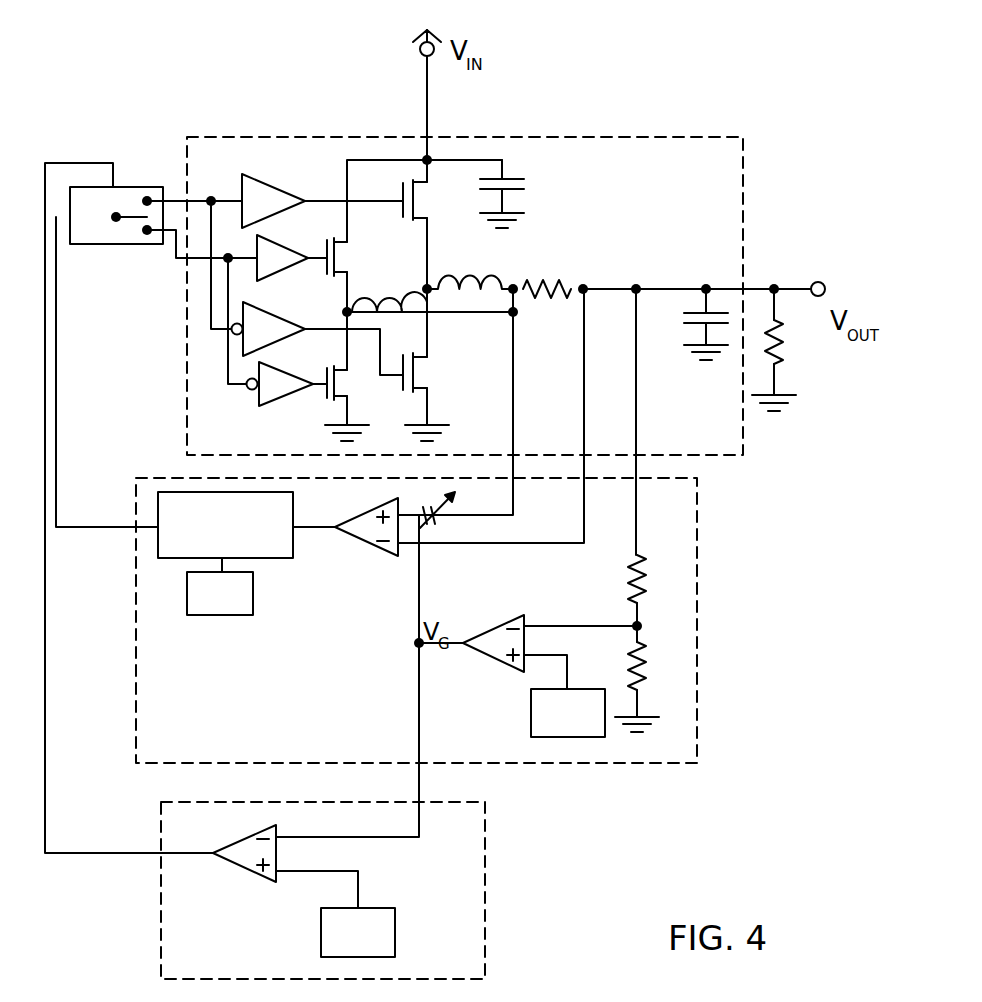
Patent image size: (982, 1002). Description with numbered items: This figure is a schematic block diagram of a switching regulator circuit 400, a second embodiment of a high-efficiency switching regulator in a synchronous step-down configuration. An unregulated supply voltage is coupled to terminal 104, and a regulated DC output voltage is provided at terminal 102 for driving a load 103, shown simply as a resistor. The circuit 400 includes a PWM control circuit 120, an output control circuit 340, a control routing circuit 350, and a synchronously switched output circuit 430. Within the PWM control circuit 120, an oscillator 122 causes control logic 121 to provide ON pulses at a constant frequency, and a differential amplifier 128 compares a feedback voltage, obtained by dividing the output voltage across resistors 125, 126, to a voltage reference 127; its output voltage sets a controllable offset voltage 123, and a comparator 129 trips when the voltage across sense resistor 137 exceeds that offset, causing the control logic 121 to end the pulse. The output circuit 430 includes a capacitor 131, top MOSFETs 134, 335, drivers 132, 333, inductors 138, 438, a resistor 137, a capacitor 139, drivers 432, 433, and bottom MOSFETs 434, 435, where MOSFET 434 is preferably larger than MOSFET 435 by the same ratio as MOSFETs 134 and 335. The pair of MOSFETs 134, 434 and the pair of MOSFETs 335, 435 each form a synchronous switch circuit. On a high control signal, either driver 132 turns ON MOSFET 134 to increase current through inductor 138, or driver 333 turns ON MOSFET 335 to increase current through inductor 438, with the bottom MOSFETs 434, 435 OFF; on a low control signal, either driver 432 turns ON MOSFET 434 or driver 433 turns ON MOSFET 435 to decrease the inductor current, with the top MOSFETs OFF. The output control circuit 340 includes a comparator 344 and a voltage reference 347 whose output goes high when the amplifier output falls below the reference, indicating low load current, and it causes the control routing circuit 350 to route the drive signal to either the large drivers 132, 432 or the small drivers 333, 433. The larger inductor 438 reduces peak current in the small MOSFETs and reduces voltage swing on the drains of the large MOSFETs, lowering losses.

The terminal 102 is at (818, 281).
The load 103 is at (793, 350).
The terminal 104 is at (419, 47).
The PWM control circuit 120 is at (735, 696).
The control logic 121 is at (312, 514).
The oscillator 122 is at (250, 617).
The controllable offset voltage 123 is at (434, 520).
The resistor 125 is at (650, 575).
The resistor 126 is at (657, 662).
The voltage reference 127 is at (531, 705).
The differential amplifier 128 is at (487, 655).
The comparator 129 is at (375, 550).
The capacitor 131 is at (532, 182).
The driver 132 is at (262, 180).
The top MOSFET 134 is at (415, 207).
The sense resistor 137 is at (563, 287).
The inductor 138 is at (482, 264).
The capacitor 139 is at (684, 320).
The driver 333 is at (286, 245).
The top MOSFET 335 is at (337, 248).
The output control circuit 340 is at (510, 860).
The comparator 344 is at (248, 870).
The voltage reference 347 is at (430, 935).
The control routing circuit 350 is at (155, 187).
The switching regulator circuit 400 is at (743, 100).
The synchronously switched output circuit 430 is at (745, 165).
The driver 432 is at (265, 306).
The driver 433 is at (285, 366).
The bottom MOSFET 434 is at (418, 370).
The bottom MOSFET 435 is at (337, 378).
The inductor 438 is at (368, 292).